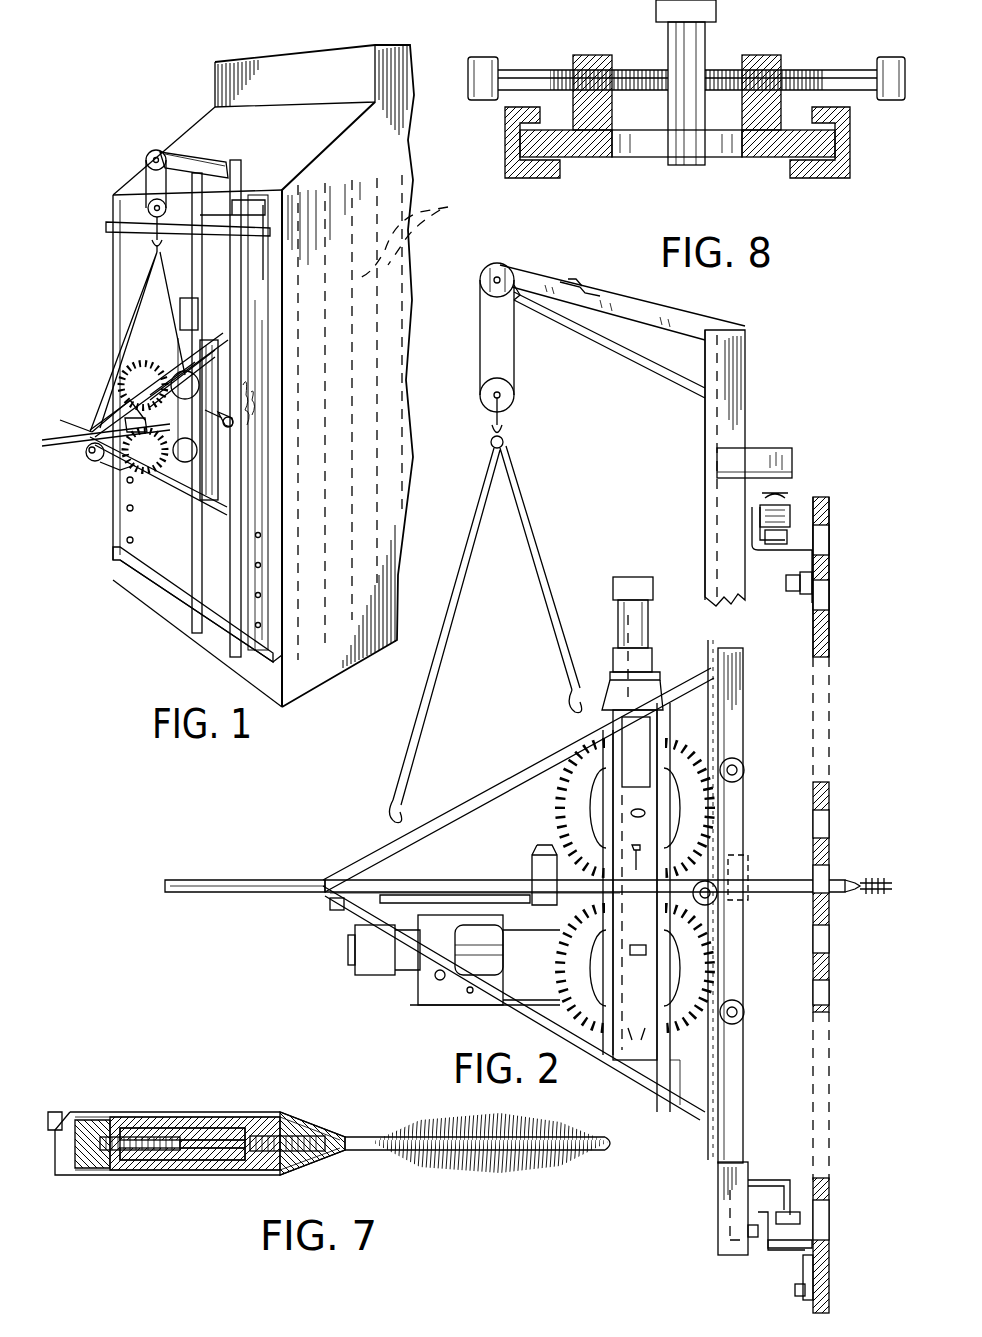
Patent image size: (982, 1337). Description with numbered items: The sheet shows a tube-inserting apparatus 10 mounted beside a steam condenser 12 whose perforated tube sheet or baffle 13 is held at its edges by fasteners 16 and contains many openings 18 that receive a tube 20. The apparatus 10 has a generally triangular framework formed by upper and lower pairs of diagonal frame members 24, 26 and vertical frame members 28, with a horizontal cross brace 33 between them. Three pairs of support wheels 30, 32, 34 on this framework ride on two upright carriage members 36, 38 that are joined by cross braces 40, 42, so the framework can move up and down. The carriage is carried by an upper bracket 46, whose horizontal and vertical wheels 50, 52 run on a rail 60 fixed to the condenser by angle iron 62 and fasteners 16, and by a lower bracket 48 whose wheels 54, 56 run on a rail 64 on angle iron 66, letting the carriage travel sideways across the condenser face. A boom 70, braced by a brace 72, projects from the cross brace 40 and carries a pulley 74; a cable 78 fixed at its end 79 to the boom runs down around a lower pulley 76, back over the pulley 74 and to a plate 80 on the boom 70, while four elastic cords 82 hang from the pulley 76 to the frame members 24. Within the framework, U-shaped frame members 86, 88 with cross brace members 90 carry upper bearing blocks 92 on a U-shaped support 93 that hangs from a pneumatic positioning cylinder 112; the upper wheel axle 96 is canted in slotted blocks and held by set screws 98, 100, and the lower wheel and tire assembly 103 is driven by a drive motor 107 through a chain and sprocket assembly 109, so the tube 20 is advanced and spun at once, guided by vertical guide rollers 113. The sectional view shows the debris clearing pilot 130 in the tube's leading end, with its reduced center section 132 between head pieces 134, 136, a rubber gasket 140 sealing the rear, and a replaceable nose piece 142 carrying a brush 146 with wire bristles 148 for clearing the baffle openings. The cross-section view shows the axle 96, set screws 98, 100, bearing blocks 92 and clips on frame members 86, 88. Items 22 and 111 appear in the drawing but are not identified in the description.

In FIG. 1, the apparatus 10 is at (105, 340).
In FIG. 2, the apparatus 10 is at (395, 745).
In FIG. 1, the steam condenser 12 is at (420, 62).
In FIG. 2, the steam condenser 12 is at (842, 642).
In FIG. 1, the perforated tube sheet or baffle 13 is at (85, 538).
In FIG. 2, the perforated tube sheet or baffle 13 is at (829, 572).
In FIG. 1, the fastener 16 is at (126, 508).
In FIG. 2, the fastener 16 is at (790, 592).
In FIG. 1, the openings 18 is at (255, 455).
In FIG. 2, the openings 18 is at (832, 825).
In FIG. 1, the tube 20 is at (50, 440).
In FIG. 2, the tube 20 is at (238, 880).
In FIG. 7, the tube 20 is at (52, 1112).
In FIG. 2, the shaft 22 is at (812, 893).
In FIG. 1, the upper diagonal frame members 24 is at (165, 372).
In FIG. 2, the upper diagonal frame members 24 is at (515, 770).
In FIG. 1, the lower diagonal frame members 26 is at (185, 485).
In FIG. 2, the lower diagonal frame members 26 is at (530, 1008).
In FIG. 2, the vertically disposed frame members 28 is at (745, 690).
In FIG. 2, the support wheels 30 is at (745, 768).
In FIG. 1, the support wheels 32 is at (230, 420).
In FIG. 2, the support wheels 32 is at (715, 900).
In FIG. 1, the cross brace 33 is at (85, 450).
In FIG. 2, the cross brace 33 is at (332, 912).
In FIG. 2, the support wheels 34 is at (745, 1015).
In FIG. 1, the upright carriage member 36 is at (238, 320).
In FIG. 2, the upright carriage member 36 is at (724, 555).
In FIG. 1, the upright carriage member 38 is at (180, 300).
In FIG. 1, the cross brace 40 is at (218, 165).
In FIG. 2, the cross brace 40 is at (705, 384).
In FIG. 1, the cross brace 42 is at (218, 638).
In FIG. 2, the cross brace 42 is at (718, 1228).
In FIG. 1, the bracket 46 is at (245, 205).
In FIG. 2, the bracket 46 is at (762, 452).
In FIG. 2, the bracket 48 is at (772, 1180).
In FIG. 2, the horizontal wheel 50 is at (790, 510).
In FIG. 2, the vertical wheel 52 is at (775, 545).
In FIG. 2, the wheel 54 is at (755, 1240).
In FIG. 2, the wheel 56 is at (800, 1212).
In FIG. 1, the rail 60 is at (135, 232).
In FIG. 2, the rail 60 is at (752, 513).
In FIG. 2, the angle iron 62 is at (840, 577).
In FIG. 2, the rail 64 is at (790, 1242).
In FIG. 2, the angle iron 66 is at (815, 1262).
In FIG. 2, the boom 70 is at (655, 308).
In FIG. 2, the brace 72 is at (655, 345).
In FIG. 1, the pulley 74 is at (140, 162).
In FIG. 2, the pulley 74 is at (482, 280).
In FIG. 1, the lower pulley 76 is at (148, 210).
In FIG. 2, the lower pulley 76 is at (482, 402).
In FIG. 2, the cable 78 is at (518, 345).
In FIG. 2, the cable end 79 is at (518, 305).
In FIG. 2, the plate 80 is at (585, 285).
In FIG. 1, the cords 82 is at (150, 318).
In FIG. 2, the cords 82 is at (485, 634).
In FIG. 1, the frame member 86 is at (169, 419).
In FIG. 8, the frame member 86 is at (512, 178).
In FIG. 2, the frame member 86 is at (600, 785).
In FIG. 8, the frame member 88 is at (832, 178).
In FIG. 2, the frame member 88 is at (656, 728).
In FIG. 2, the cross brace members 90 is at (635, 850).
In FIG. 8, the bearing blocks 92 is at (588, 157).
In FIG. 2, the U-shaped support 93 is at (636, 752).
In FIG. 8, the axle 96 is at (688, 165).
In FIG. 8, the front set screw 98 is at (483, 57).
In FIG. 8, the rear set screw 100 is at (888, 57).
In FIG. 2, the lower wheel and tire assembly 103 is at (682, 1022).
In FIG. 2, the drive motor 107 is at (398, 972).
In FIG. 2, the chain and sprocket assembly 109 is at (520, 935).
In FIG. 1, the guide bar 111 is at (110, 465).
In FIG. 2, the guide bar 111 is at (465, 890).
In FIG. 2, the positioning cylinder 112 is at (670, 660).
In FIG. 1, the guide rollers 113 is at (108, 412).
In FIG. 2, the guide rollers 113 is at (530, 858).
In FIG. 7, the debris clearing pilot 130 is at (112, 1117).
In FIG. 7, the reduced center section 132 is at (198, 1115).
In FIG. 7, the head piece 134 is at (105, 1170).
In FIG. 7, the head piece 136 is at (265, 1170).
In FIG. 7, the rubber gasket 140 is at (65, 1105).
In FIG. 2, the nose piece 142 is at (852, 880).
In FIG. 7, the nose piece 142 is at (328, 1115).
In FIG. 7, the brush 146 is at (375, 1137).
In FIG. 2, the wire bristles 148 is at (882, 895).
In FIG. 7, the wire bristles 148 is at (478, 1170).